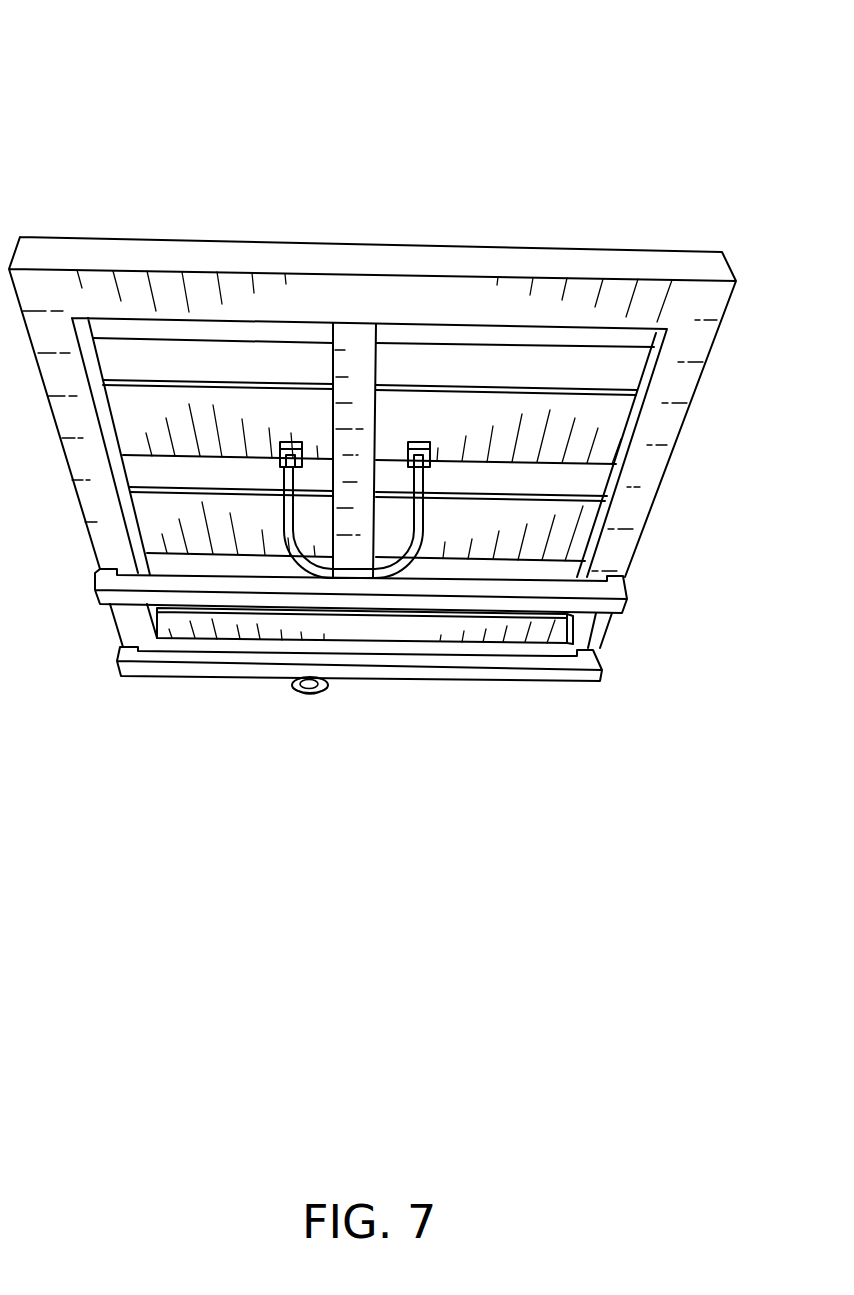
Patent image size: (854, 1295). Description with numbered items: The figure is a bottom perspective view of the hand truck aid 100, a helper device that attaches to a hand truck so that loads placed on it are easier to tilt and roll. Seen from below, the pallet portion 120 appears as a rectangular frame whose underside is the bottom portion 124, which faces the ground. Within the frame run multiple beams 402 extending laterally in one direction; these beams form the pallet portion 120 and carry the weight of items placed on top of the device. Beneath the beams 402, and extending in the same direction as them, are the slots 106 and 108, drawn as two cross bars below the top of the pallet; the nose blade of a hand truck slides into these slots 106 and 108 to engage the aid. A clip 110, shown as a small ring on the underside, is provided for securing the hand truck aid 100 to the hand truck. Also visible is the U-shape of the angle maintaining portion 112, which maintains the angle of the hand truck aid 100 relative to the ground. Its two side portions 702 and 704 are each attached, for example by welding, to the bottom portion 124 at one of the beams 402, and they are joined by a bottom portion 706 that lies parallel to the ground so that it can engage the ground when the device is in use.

The hand truck aid 100 is at (372, 481).
The pallet portion 120 is at (498, 244).
The beams 402 is at (490, 388).
The bottom portion 124 is at (467, 518).
The slot 108 is at (567, 582).
The slot 106 is at (560, 658).
The clip 110 is at (322, 693).
The angle maintaining portion 112 is at (381, 693).
The side portion 702 is at (282, 527).
The side portion 704 is at (422, 542).
The bottom portion 706 is at (370, 573).